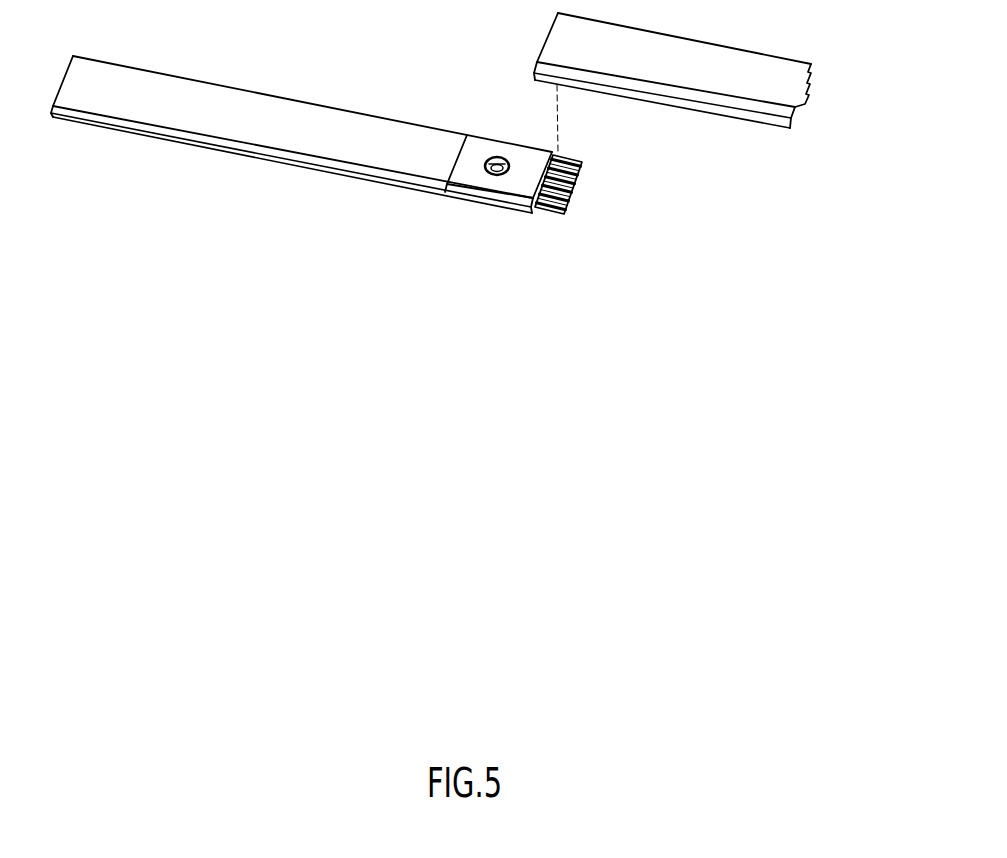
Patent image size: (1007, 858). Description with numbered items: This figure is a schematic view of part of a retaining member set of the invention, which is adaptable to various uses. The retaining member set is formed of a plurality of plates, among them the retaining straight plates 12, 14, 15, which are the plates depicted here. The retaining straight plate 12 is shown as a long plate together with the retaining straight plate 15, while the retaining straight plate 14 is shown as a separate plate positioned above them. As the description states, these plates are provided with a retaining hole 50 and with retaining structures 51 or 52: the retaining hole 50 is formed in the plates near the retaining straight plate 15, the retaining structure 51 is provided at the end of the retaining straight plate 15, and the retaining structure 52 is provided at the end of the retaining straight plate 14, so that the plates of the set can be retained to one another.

The retaining straight plate 12 is at (338, 147).
The retaining straight plate 14 is at (738, 93).
The retaining straight plate 15 is at (488, 188).
The retaining hole 50 is at (493, 154).
The retaining structure 51 is at (566, 192).
The retaining structure 52 is at (803, 112).